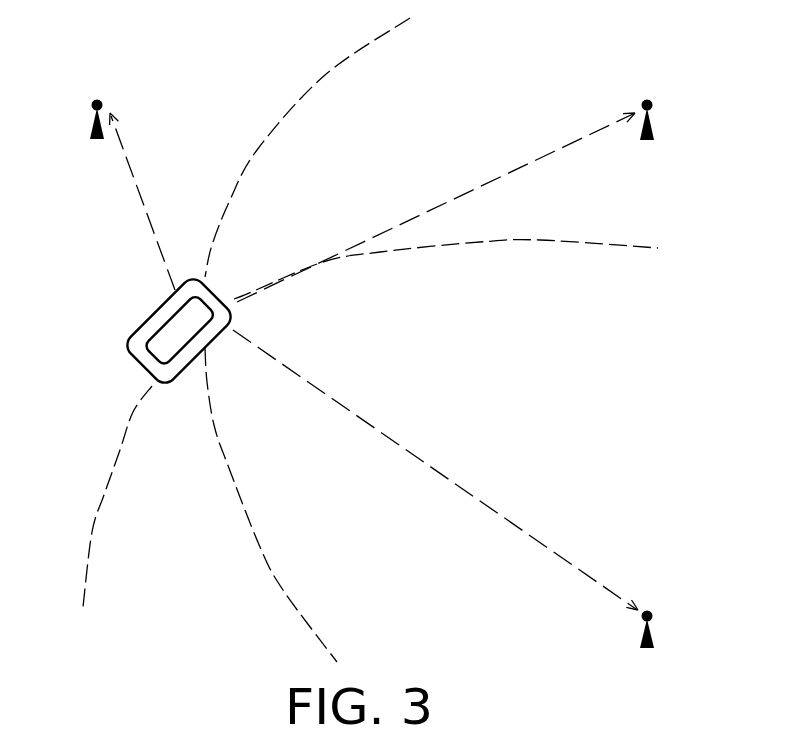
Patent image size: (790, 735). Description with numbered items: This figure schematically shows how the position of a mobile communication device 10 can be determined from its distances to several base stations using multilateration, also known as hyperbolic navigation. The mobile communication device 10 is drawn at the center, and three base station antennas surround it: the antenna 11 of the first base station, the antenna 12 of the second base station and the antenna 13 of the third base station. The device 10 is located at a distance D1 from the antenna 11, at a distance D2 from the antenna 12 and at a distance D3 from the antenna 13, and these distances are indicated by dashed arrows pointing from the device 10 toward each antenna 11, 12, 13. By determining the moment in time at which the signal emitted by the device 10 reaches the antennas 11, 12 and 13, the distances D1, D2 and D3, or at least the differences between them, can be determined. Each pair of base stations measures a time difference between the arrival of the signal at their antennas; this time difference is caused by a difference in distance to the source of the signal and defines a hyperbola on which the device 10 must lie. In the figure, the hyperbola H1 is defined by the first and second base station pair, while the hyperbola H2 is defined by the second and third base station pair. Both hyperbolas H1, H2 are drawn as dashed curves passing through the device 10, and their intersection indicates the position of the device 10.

The mobile communication device 10 is at (143, 372).
The antenna 11 is at (93, 118).
The antenna 12 is at (653, 122).
The antenna 13 is at (653, 634).
The distance D1 is at (155, 232).
The distance D2 is at (403, 222).
The distance D3 is at (390, 438).
The hyperbola H1 is at (325, 75).
The hyperbola H2 is at (540, 242).